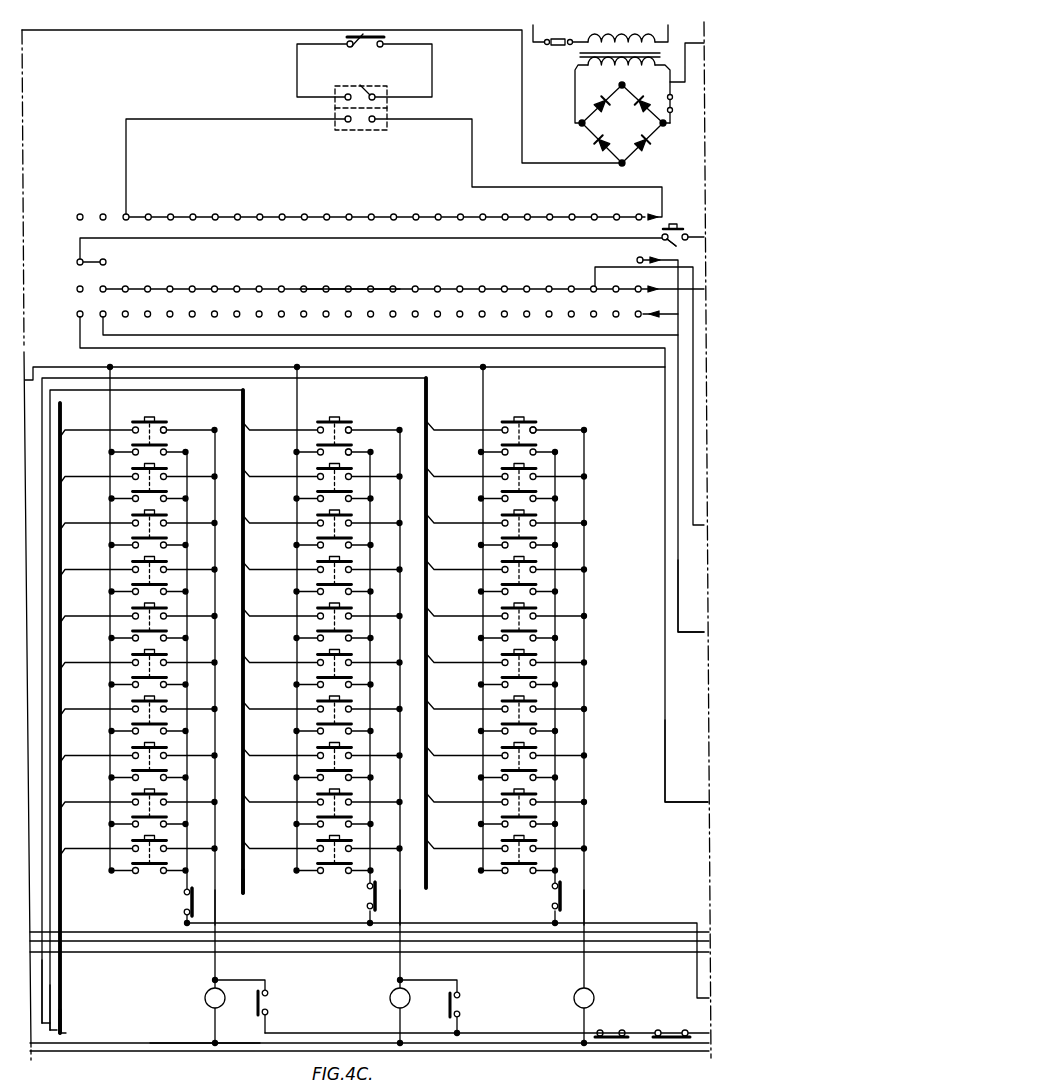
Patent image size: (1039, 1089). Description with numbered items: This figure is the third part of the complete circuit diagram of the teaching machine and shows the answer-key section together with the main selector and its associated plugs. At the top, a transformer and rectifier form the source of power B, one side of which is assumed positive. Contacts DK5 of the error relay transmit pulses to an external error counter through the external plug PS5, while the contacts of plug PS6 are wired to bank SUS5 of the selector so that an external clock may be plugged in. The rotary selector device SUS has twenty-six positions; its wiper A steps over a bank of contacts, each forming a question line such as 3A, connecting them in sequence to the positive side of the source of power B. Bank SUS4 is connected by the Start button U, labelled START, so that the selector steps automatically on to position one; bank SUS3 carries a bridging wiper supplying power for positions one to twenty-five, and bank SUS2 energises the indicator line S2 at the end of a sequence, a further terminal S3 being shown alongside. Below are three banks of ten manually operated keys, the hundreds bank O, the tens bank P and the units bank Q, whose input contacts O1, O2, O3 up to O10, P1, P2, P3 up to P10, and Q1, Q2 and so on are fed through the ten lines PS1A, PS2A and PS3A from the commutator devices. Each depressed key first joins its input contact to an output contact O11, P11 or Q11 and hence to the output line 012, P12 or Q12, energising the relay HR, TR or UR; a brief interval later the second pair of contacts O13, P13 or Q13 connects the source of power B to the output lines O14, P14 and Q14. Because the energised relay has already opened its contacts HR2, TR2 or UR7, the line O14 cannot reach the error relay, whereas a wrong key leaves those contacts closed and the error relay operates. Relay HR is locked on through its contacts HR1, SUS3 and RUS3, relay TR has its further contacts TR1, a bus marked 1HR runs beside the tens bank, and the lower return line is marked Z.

The source of power B is at (628, 134).
The contacts of relay DK DK5 is at (364, 65).
The external plug PS5 is at (381, 64).
The plug PS6 is at (360, 122).
The bank of the selector SUS SUS5 is at (78, 214).
The bank of the selector SUS SUS4 is at (345, 251).
The bank of the selector SUS SUS3 is at (79, 287).
The bank of the selector SUS SUS2 is at (78, 314).
The selector device SUS is at (366, 283).
The Start button U is at (688, 231).
The Start button START is at (662, 243).
The question line / bridging wiper 3A is at (592, 285).
The wiper A is at (660, 444).
The input contact of key bank O O1 is at (133, 433).
The output contact of key bank O O11 is at (166, 427).
The input contact of key bank O O2 is at (133, 479).
The input contact of key bank O O3 is at (133, 525).
The pair of contacts of key bank O O13 is at (145, 592).
The input contact of key bank O O10 is at (134, 846).
The bank of manually operated switch keys O is at (90, 872).
The output line O14 is at (184, 882).
The contacts of relay HR HR2 is at (184, 903).
The output line 012 is at (217, 904).
The bus 1HR is at (272, 887).
The input contact of key bank P P1 is at (318, 432).
The output contact of key bank P P11 is at (352, 427).
The input contact of key bank P P2 is at (318, 479).
The input contact of key bank P P3 is at (318, 525).
The contacts of key bank P P13 is at (330, 555).
The input contact of key bank P P10 is at (318, 846).
The bank of manually operated keys P is at (273, 872).
The output line P14 is at (366, 880).
The contacts of relay TR TR2 is at (367, 900).
The output line P12 is at (402, 905).
The input contact of key bank Q Q1 is at (503, 432).
The output contact of key bank Q Q11 is at (536, 432).
The input contact of key bank Q Q2 is at (503, 478).
The pair of contacts of key bank Q Q13 is at (531, 585).
The bank of manually operated keys Q is at (461, 872).
The output line Q14 is at (552, 880).
The contacts of relay UR UR7 is at (553, 900).
The output line Q12 is at (586, 906).
The indicator line S2 is at (699, 633).
The terminal S3 is at (697, 792).
The relay HR is at (205, 998).
The contacts of relay HR HR1 is at (268, 995).
The relay TR is at (390, 998).
The contacts of relay TR TR1 is at (461, 1001).
The relay UR is at (574, 998).
The contacts RUS3 is at (672, 1030).
The lines PS3A is at (44, 978).
The lines PS2A is at (52, 1002).
The lines PS1A is at (62, 1028).
The terminal Z is at (190, 1055).